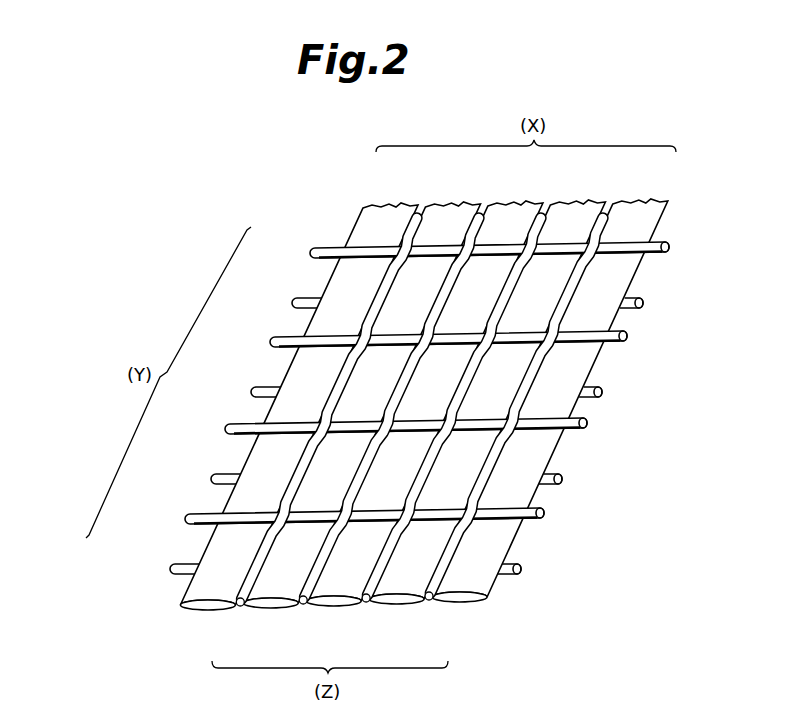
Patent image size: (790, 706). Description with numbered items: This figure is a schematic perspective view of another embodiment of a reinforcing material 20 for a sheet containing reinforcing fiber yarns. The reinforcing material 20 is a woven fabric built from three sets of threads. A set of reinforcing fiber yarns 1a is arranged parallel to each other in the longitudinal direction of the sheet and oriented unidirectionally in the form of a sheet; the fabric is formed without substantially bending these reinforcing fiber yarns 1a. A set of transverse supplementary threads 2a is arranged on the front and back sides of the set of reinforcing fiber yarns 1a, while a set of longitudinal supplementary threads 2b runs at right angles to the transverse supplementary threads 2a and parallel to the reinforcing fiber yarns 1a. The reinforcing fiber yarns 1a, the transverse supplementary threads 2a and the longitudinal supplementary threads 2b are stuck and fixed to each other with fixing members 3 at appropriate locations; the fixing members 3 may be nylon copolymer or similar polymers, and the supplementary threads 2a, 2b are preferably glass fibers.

The reinforcing material 20 is at (150, 310).
The reinforcing fiber yarns 1a is at (392, 207).
The transverse supplementary threads 2a is at (315, 247).
The longitudinal supplementary threads 2b is at (239, 607).
The fixing members 3 is at (624, 256).